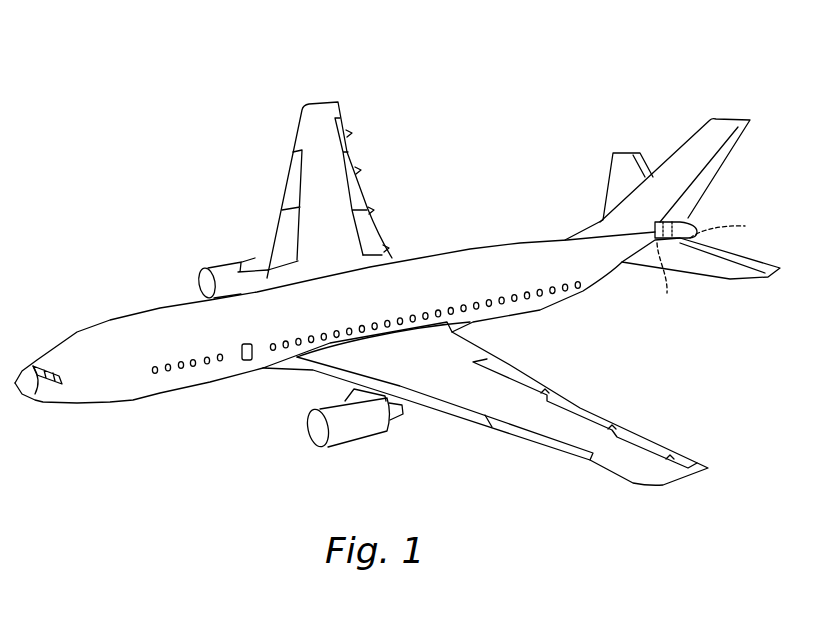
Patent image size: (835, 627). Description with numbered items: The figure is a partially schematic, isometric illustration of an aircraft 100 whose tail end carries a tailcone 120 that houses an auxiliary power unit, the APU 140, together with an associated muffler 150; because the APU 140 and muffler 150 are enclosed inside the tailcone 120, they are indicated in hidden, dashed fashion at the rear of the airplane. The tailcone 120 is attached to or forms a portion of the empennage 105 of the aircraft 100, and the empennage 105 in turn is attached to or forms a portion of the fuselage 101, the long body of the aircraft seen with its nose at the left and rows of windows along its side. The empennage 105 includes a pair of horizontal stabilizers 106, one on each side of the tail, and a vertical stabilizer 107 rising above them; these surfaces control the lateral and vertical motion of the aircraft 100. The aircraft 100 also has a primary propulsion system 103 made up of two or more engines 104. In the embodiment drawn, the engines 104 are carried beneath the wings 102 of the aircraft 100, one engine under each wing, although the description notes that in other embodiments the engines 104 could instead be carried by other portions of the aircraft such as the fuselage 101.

The aircraft 100 is at (157, 58).
The fuselage 101 is at (231, 371).
The wings 102 is at (641, 486).
The primary propulsion system 103 is at (150, 232).
The engines 104 is at (206, 268).
The empennage 105 is at (538, 218).
The horizontal stabilizers 106 is at (617, 163).
The vertical stabilizer 107 is at (700, 148).
The tailcone 120 is at (689, 222).
The APU 140 is at (662, 279).
The muffler 150 is at (734, 230).